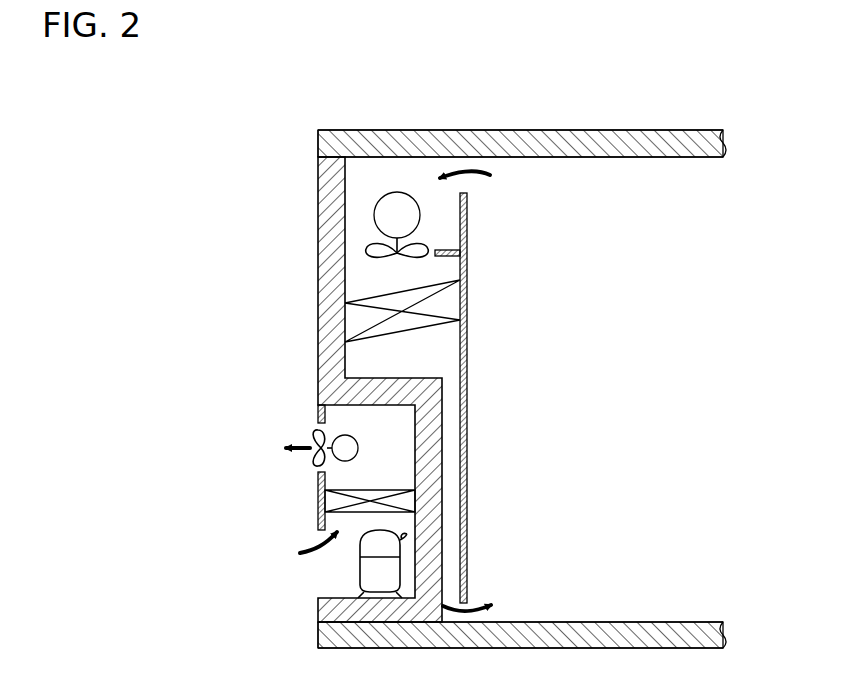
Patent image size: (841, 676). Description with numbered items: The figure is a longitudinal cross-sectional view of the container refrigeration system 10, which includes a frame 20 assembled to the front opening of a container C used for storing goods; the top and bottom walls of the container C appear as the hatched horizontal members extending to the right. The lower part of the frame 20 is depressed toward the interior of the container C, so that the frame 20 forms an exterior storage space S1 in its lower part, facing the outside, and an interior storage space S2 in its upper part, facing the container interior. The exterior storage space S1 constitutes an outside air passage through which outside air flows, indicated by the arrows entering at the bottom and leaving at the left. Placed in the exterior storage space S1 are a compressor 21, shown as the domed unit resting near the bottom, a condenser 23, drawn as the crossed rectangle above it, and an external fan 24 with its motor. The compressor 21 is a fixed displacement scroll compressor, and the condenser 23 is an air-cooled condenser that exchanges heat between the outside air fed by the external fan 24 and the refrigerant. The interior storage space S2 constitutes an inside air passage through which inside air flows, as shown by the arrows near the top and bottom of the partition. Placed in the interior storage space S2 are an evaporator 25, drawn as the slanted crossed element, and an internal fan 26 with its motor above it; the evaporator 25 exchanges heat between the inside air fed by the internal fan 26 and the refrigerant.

The container refrigeration system 10 is at (323, 343).
The frame 20 is at (318, 298).
The compressor 21 is at (361, 570).
The condenser 23 is at (370, 493).
The external fan 24 is at (316, 460).
The evaporator 25 is at (405, 321).
The internal fan 26 is at (366, 252).
The exterior storage space S1 is at (340, 414).
The interior storage space S2 is at (398, 172).
The container C is at (612, 138).